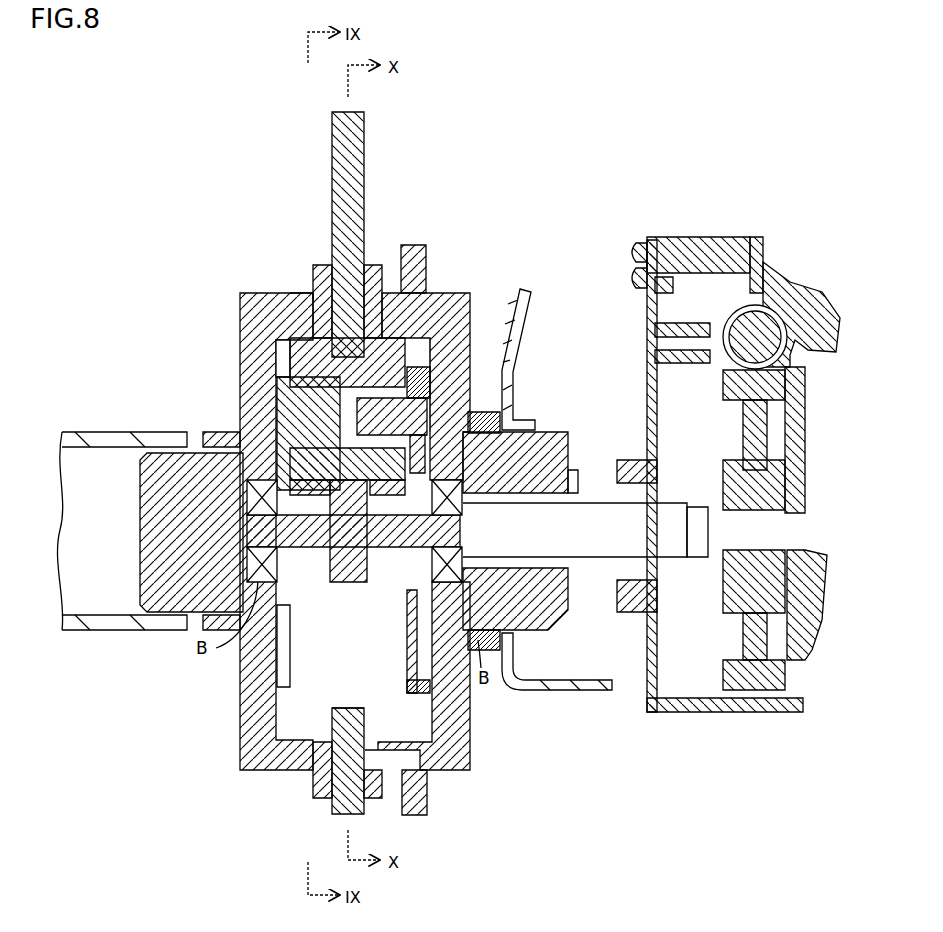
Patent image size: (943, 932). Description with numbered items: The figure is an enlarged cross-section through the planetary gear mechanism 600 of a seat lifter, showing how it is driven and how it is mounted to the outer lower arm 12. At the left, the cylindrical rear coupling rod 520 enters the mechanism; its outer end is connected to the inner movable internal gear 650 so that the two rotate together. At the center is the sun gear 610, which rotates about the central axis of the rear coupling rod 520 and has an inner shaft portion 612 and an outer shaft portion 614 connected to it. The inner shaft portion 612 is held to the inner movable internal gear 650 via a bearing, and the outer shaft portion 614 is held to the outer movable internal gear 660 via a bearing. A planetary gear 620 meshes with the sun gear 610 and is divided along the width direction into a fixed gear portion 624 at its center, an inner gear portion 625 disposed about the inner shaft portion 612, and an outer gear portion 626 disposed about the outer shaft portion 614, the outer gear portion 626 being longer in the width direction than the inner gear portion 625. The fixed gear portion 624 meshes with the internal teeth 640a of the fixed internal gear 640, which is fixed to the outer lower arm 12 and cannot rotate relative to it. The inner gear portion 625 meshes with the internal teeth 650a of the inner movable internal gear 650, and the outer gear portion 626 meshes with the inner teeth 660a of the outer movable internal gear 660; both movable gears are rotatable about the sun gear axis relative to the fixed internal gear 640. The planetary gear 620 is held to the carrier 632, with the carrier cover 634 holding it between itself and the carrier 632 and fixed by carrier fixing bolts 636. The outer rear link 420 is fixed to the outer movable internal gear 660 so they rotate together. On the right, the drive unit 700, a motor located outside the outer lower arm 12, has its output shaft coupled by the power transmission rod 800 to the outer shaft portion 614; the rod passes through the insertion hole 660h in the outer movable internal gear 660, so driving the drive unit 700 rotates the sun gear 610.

The outer lower arm 12 is at (532, 294).
The outer rear link 420 is at (410, 256).
The rear coupling rod 520 is at (112, 432).
The planetary gear mechanism 600 is at (434, 108).
The sun gear 610 is at (348, 573).
The inner shaft portion 612 is at (312, 543).
The outer shaft portion 614 is at (405, 542).
The planetary gear 620 is at (300, 360).
The fixed gear portion 624 is at (320, 295).
The inner gear portion 625 is at (296, 297).
The outer gear portion 626 is at (373, 297).
The carrier 632 is at (290, 403).
The carrier cover 634 is at (418, 686).
The carrier fixing bolt 636 is at (432, 388).
The fixed internal gear 640 is at (367, 130).
The internal teeth 640a is at (340, 708).
The inner movable internal gear 650 is at (242, 295).
The internal teeth 650a is at (276, 346).
The outer movable internal gear 660 is at (455, 298).
The inner teeth 660a is at (447, 335).
The insertion hole 660h is at (578, 470).
The drive unit 700 is at (780, 280).
The power transmission rod 800 is at (592, 545).